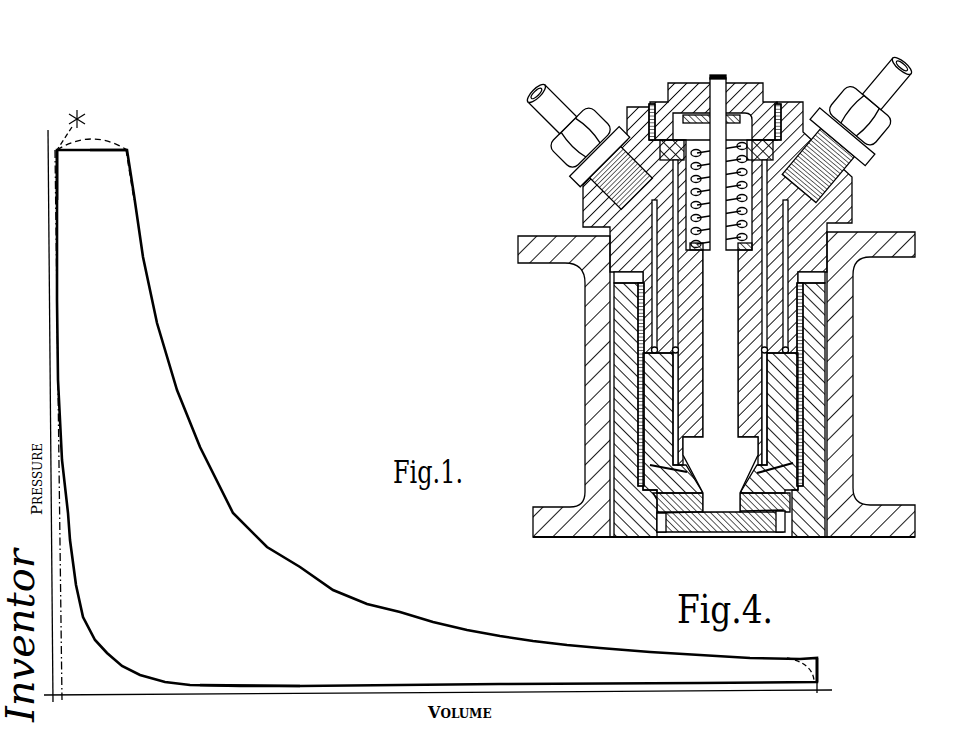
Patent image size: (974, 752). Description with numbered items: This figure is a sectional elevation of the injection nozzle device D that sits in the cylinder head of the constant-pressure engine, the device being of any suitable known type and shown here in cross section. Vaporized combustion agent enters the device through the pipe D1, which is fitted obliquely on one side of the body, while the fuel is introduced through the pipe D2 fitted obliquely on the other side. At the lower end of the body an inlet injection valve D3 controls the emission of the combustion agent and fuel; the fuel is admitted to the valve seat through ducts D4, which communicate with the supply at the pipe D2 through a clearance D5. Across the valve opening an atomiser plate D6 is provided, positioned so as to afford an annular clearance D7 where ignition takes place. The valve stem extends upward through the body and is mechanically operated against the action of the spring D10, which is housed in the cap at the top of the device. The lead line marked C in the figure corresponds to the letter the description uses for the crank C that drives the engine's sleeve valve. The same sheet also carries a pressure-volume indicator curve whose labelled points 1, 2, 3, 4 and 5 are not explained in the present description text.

In FIG. 1, the start of injection point on indicator diagram 1 is at (53, 164).
In FIG. 1, the end of constant pressure combustion point 2 is at (114, 136).
In FIG. 1, the end of expansion point 3 is at (819, 649).
In FIG. 1, the exhaust point 4 is at (814, 690).
In FIG. 1, the compression line 5 is at (245, 683).
In FIG. 4, the crank C is at (667, 482).
In FIG. 4, the injection nozzle device D is at (805, 310).
In FIG. 4, the pipe D1 is at (895, 87).
In FIG. 4, the pipe D2 is at (543, 87).
In FIG. 4, the inlet injection valve D3 is at (713, 478).
In FIG. 4, the ducts D4 is at (797, 473).
In FIG. 4, the clearance D5 is at (800, 420).
In FIG. 4, the atomiser plate D6 is at (755, 531).
In FIG. 4, the annular clearance D7 is at (660, 534).
In FIG. 4, the spring D10 is at (710, 135).